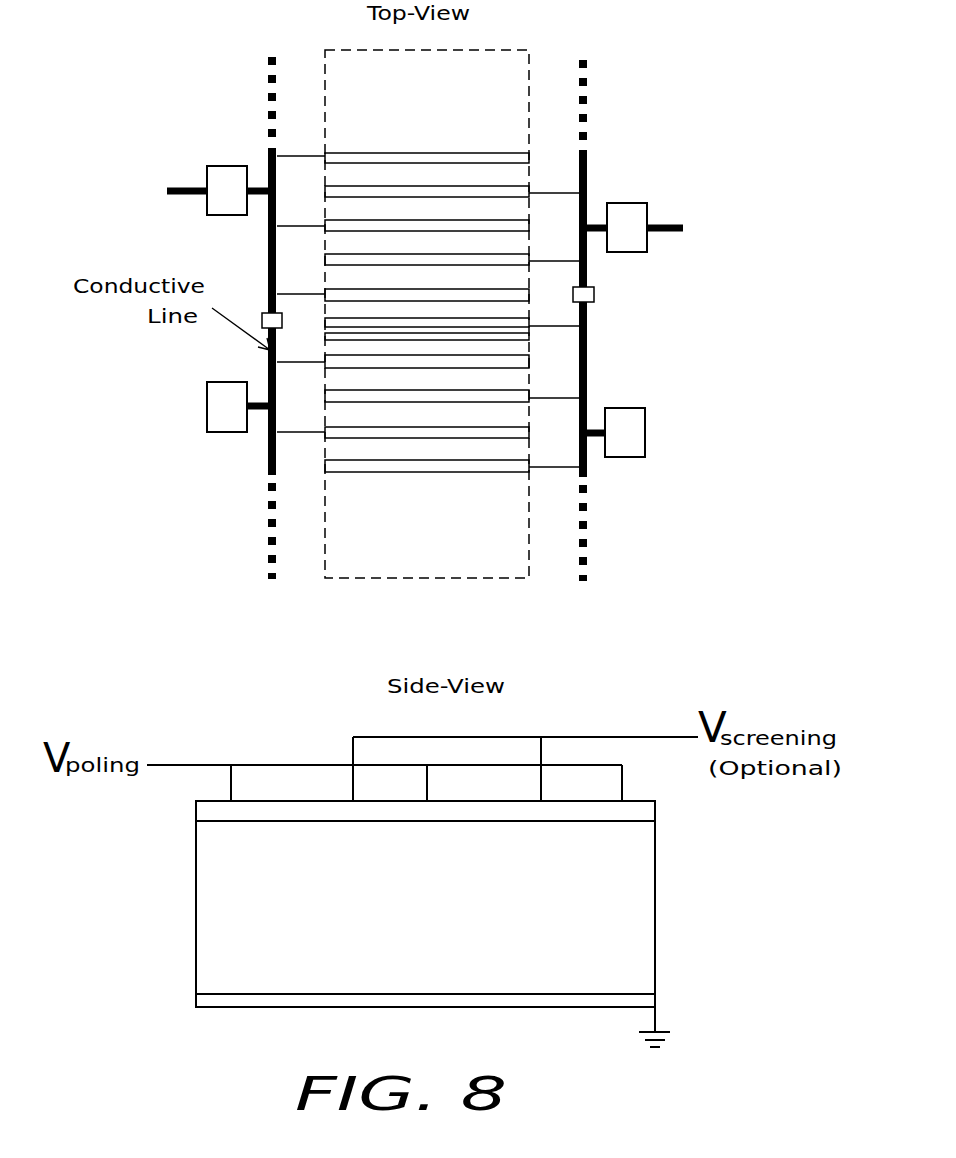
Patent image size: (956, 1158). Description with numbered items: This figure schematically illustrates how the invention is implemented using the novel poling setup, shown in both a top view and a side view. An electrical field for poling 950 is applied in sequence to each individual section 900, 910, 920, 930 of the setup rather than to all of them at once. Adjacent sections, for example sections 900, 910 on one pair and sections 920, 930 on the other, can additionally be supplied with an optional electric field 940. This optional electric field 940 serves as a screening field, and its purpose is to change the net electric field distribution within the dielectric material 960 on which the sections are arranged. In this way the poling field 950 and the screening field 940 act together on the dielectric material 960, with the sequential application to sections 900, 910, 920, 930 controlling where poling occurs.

The section 900 is at (230, 126).
The section 910 is at (631, 183).
The section 920 is at (194, 462).
The section 930 is at (645, 481).
The optional electric field 940 is at (668, 236).
The electrical field for poling 950 is at (185, 196).
The dielectric material 960 is at (510, 513).